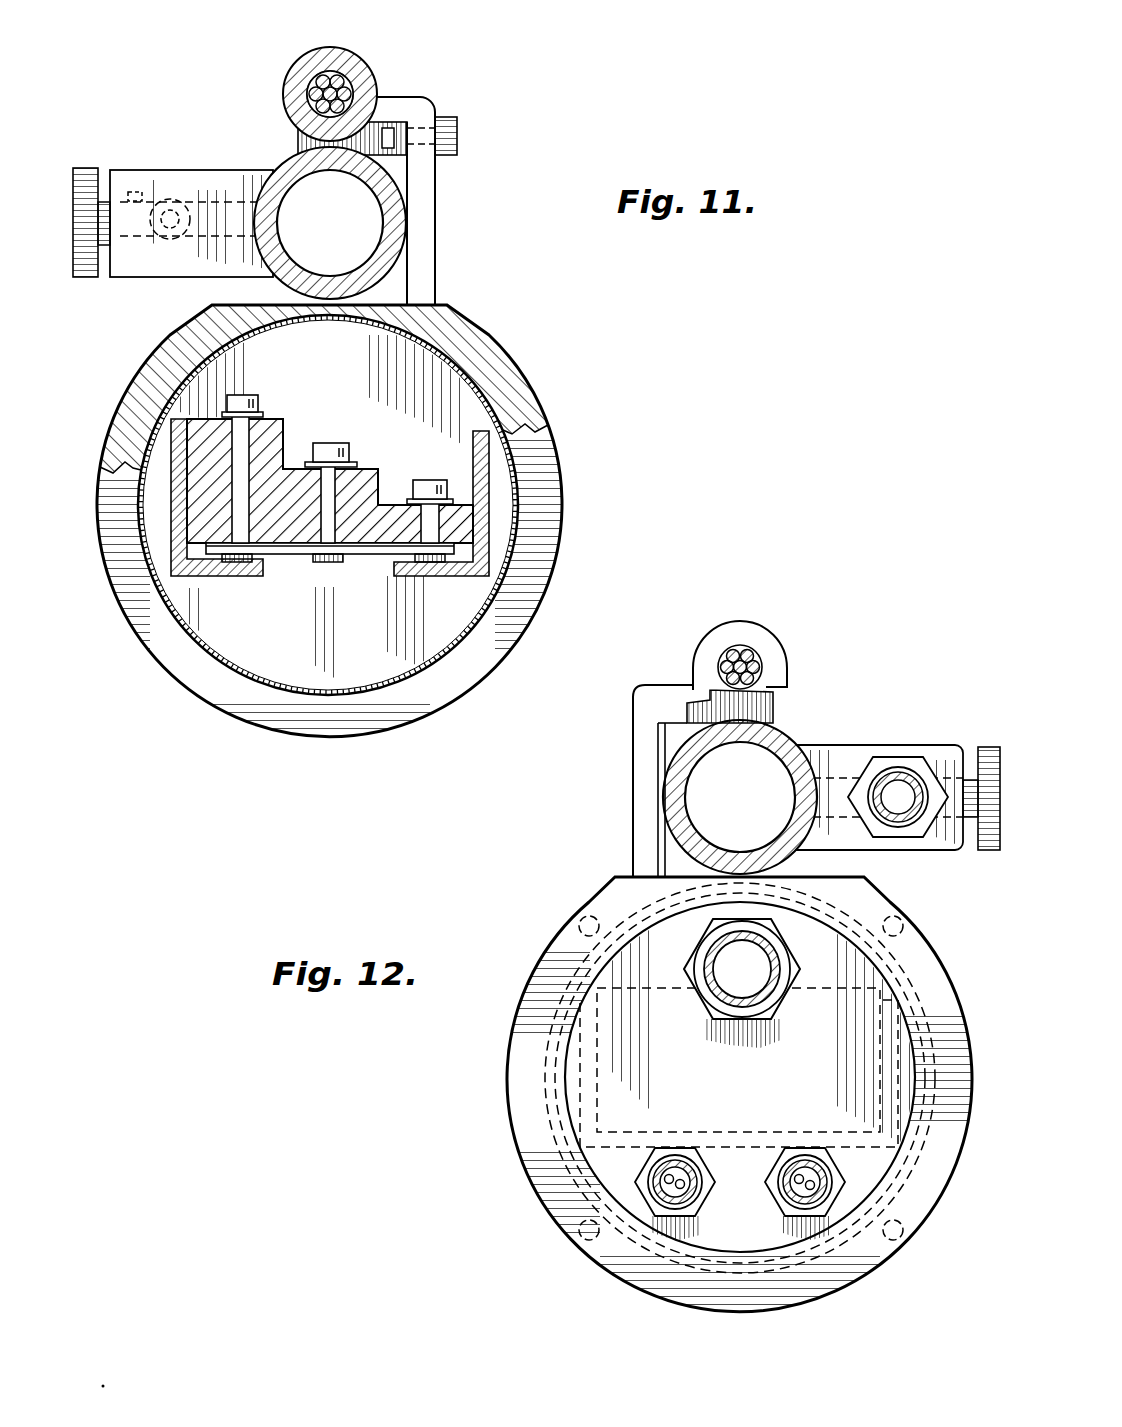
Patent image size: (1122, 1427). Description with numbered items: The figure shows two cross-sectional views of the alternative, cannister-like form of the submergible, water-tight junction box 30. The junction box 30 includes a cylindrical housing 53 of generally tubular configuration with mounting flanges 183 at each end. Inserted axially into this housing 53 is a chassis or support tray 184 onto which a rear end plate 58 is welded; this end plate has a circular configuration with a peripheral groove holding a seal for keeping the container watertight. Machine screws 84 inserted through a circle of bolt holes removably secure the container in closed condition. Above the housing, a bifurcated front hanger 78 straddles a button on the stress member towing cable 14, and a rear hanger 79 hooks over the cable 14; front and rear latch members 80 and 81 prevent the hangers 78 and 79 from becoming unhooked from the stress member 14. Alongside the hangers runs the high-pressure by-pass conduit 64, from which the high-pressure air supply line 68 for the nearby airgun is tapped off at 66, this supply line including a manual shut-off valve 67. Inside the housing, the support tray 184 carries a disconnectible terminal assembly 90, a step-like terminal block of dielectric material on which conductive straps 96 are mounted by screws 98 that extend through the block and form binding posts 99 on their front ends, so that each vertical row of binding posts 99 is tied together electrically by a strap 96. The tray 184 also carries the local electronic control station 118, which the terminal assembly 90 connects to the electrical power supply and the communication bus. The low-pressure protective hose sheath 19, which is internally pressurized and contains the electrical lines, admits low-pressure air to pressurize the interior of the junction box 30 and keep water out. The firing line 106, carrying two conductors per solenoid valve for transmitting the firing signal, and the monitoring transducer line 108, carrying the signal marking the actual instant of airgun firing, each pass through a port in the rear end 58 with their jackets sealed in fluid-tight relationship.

In FIG. 11, the stress member towing cable 14 is at (347, 78).
In FIG. 12, the stress member towing cable 14 is at (763, 663).
In FIG. 12, the low-pressure protective hose sheath 19 is at (710, 967).
In FIG. 11, the junction box 30 is at (625, 397).
In FIG. 12, the junction box 30 is at (462, 1077).
In FIG. 11, the cylindrical housing 53 is at (528, 487).
In FIG. 12, the rear end plate 58 is at (720, 1228).
In FIG. 11, the high-pressure by-pass conduit 64 is at (393, 217).
In FIG. 12, the high-pressure by-pass conduit 64 is at (670, 797).
In FIG. 11, the tap 66 is at (253, 170).
In FIG. 12, the tap 66 is at (847, 757).
In FIG. 11, the manual shut-off valve 67 is at (88, 168).
In FIG. 12, the manual shut-off valve 67 is at (1003, 847).
In FIG. 12, the high-pressure air supply line 68 is at (922, 783).
In FIG. 11, the bifurcated front hanger 78 is at (303, 57).
In FIG. 12, the rear hanger 79 is at (742, 624).
In FIG. 11, the front latch member 80 is at (298, 133).
In FIG. 12, the rear latch member 81 is at (773, 700).
In FIG. 11, the machine screws 84 is at (448, 118).
In FIG. 12, the machine screws 84 is at (580, 930).
In FIG. 11, the terminal block 90 is at (358, 425).
In FIG. 11, the conductive straps 96 is at (292, 559).
In FIG. 11, the screws 98 is at (332, 556).
In FIG. 11, the binding posts 99 is at (320, 442).
In FIG. 12, the firing line 106 is at (655, 1189).
In FIG. 12, the monitoring transducer line 108 is at (825, 1191).
In FIG. 12, the local electronic control station 118 is at (866, 984).
In FIG. 11, the mounting flanges 183 is at (483, 352).
In FIG. 11, the support tray 184 is at (210, 590).
In FIG. 12, the support tray 184 is at (580, 1119).